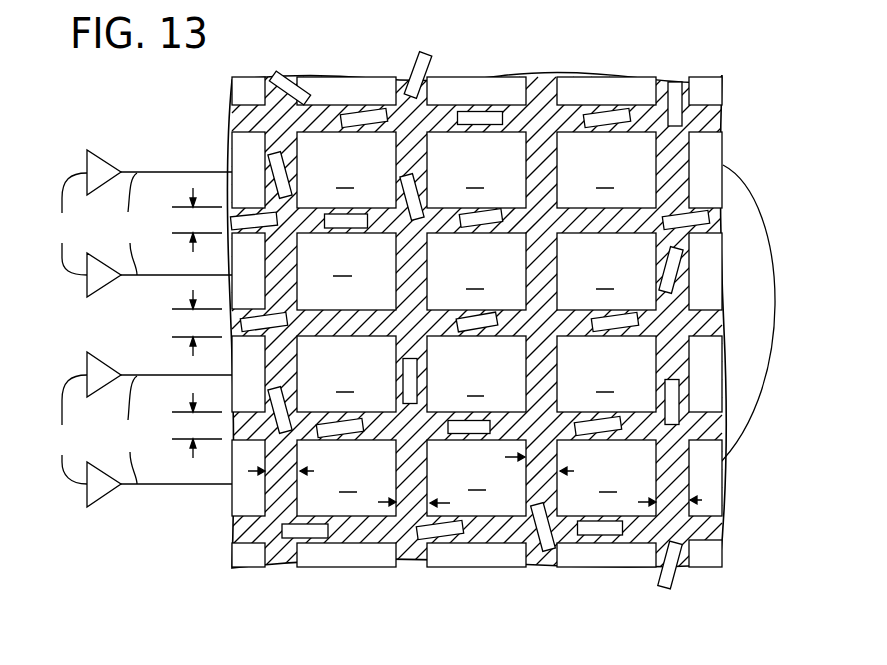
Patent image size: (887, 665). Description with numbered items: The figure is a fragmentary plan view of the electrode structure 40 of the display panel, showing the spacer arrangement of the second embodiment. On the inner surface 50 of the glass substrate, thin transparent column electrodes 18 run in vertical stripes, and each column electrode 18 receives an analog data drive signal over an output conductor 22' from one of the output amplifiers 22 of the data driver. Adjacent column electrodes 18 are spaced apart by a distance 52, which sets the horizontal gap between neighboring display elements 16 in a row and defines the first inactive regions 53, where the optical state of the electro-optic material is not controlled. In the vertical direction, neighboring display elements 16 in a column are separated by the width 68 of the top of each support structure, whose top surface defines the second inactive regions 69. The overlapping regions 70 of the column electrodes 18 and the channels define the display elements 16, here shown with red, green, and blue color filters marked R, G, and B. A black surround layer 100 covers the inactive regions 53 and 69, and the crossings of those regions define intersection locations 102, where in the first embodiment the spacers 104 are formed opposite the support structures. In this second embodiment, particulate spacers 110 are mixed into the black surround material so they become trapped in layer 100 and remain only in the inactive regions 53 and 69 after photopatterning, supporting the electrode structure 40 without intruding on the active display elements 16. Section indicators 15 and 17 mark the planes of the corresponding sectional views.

The section line 15- 15 is at (103, 118).
The display element 16 is at (565, 162).
The section line 17- 17 is at (613, 44).
The column electrode 18 is at (710, 273).
The output amplifier 22 is at (86, 328).
The output conductor 22' is at (131, 328).
The electrode structure 40 is at (226, 590).
The inner surface 50 is at (345, 567).
The distance 52 is at (180, 222).
The first inactive region 53 is at (712, 118).
The width 68 is at (283, 472).
The second inactive region 69 is at (285, 568).
The overlapping region 70 is at (594, 502).
The black surround layer 100 is at (705, 528).
The intersection location 102 is at (398, 97).
The spacer 104 is at (676, 117).
The particulate spacer 110 is at (300, 92).